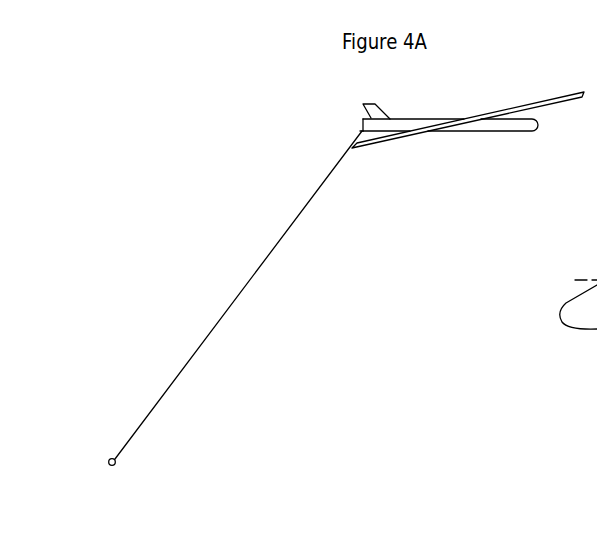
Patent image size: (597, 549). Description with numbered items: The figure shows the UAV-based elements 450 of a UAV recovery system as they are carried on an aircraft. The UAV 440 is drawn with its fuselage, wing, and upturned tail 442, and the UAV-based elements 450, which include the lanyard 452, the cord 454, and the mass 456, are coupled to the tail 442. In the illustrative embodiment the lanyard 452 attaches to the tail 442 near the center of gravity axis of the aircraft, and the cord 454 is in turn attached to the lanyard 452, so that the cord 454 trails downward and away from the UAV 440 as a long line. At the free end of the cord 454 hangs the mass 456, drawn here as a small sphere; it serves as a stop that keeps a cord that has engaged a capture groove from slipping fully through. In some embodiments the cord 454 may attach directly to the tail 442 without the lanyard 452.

The UAV 440 is at (415, 127).
The tail 442 is at (351, 119).
The lanyard 452 is at (348, 130).
The cord 454 is at (238, 281).
The mass 456 is at (133, 459).
The UAV-based elements 450 is at (273, 318).